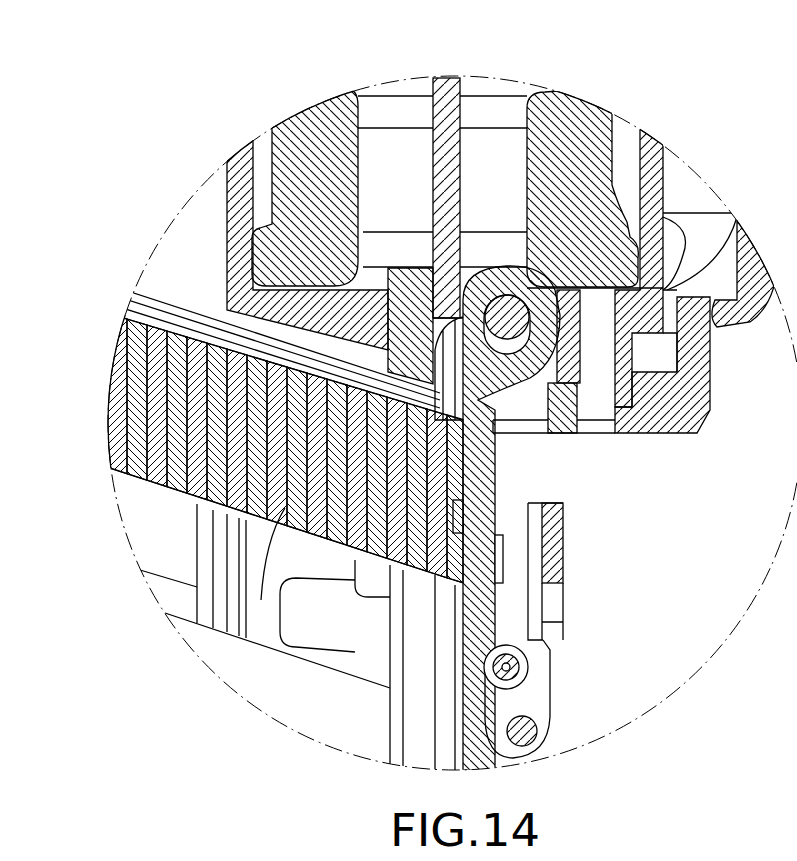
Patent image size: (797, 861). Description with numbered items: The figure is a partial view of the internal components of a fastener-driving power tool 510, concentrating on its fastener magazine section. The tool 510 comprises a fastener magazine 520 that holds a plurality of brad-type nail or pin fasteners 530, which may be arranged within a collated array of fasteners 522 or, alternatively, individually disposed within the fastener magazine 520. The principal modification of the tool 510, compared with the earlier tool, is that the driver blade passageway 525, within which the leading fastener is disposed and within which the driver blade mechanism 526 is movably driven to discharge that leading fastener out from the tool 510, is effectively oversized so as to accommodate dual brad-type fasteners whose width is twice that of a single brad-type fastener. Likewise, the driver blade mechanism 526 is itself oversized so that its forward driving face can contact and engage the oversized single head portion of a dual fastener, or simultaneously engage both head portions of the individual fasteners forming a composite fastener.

The power tool 510 is at (660, 83).
The fastener magazine 520 is at (242, 432).
The collated array of fasteners 522 is at (225, 450).
The driver blade passageway 525 is at (469, 406).
The driver blade mechanism 526 is at (436, 150).
The brad-type nail or pin fasteners 530 is at (333, 528).